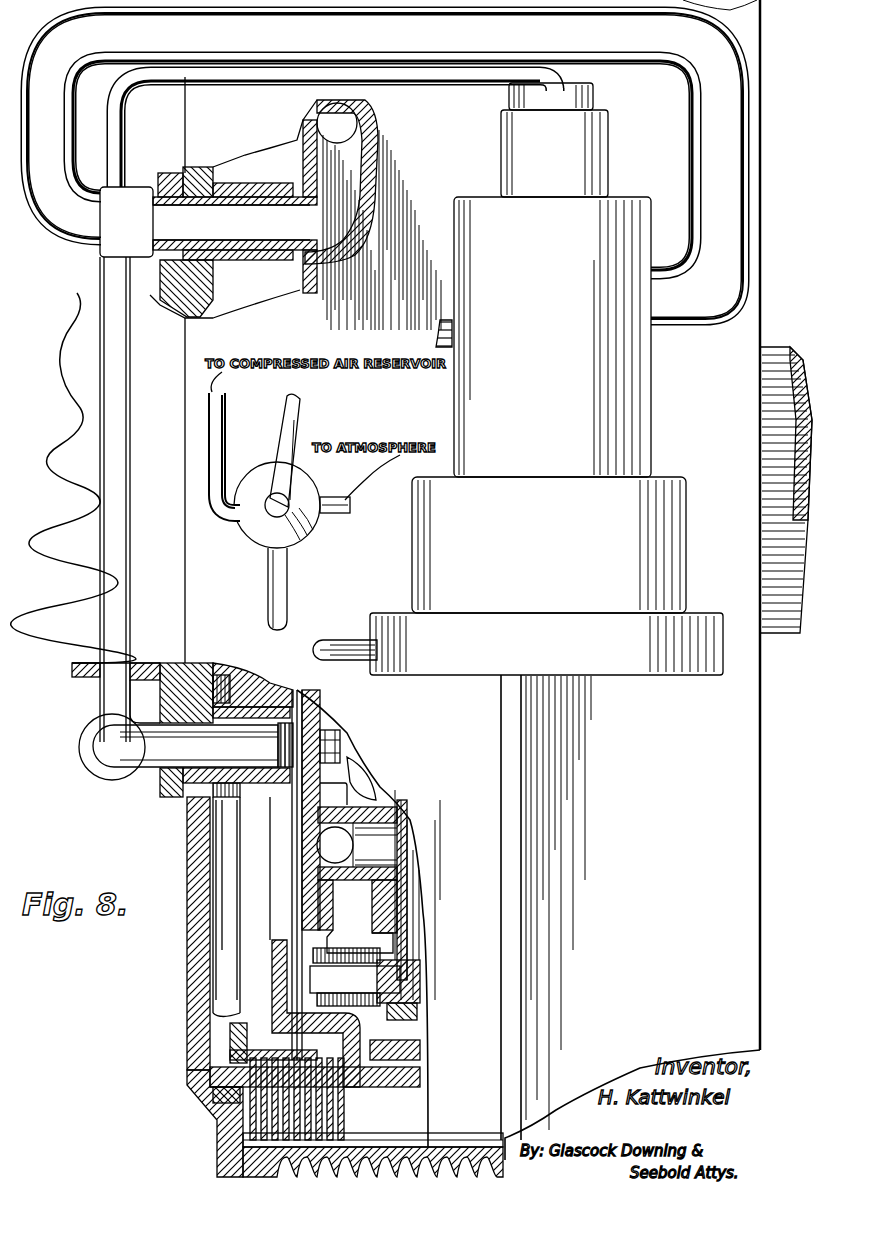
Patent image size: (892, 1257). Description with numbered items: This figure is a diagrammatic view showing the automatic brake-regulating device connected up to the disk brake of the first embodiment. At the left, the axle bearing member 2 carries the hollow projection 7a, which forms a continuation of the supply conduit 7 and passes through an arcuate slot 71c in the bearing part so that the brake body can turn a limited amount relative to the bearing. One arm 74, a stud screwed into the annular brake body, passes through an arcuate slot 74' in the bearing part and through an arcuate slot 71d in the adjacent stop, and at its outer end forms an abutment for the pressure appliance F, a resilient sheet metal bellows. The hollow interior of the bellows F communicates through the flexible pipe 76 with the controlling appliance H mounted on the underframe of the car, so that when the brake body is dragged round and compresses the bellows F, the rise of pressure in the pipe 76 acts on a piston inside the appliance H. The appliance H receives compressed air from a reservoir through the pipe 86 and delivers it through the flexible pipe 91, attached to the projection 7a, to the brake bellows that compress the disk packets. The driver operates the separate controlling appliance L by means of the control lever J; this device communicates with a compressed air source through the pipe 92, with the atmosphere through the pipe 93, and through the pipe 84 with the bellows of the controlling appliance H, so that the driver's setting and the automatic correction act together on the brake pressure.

The axle bearing member 2 is at (164, 172).
The supply conduit 7 is at (332, 122).
The hollow projection 7a is at (222, 226).
The arcuate slot 71c is at (142, 258).
The arcuate slot 71d is at (196, 846).
The arm 74 is at (193, 781).
The arcuate slot 74' is at (202, 803).
The flexible pipe 76 is at (428, 67).
The pipe 84 is at (286, 578).
The flexible pipe 86 is at (440, 322).
The flexible pipe 91 is at (702, 139).
The pipe 92 is at (226, 418).
The pipe 93 is at (348, 496).
The pressure appliance F is at (114, 780).
The controlling appliance H is at (546, 611).
The control lever J is at (303, 410).
The controlling appliance L is at (305, 537).